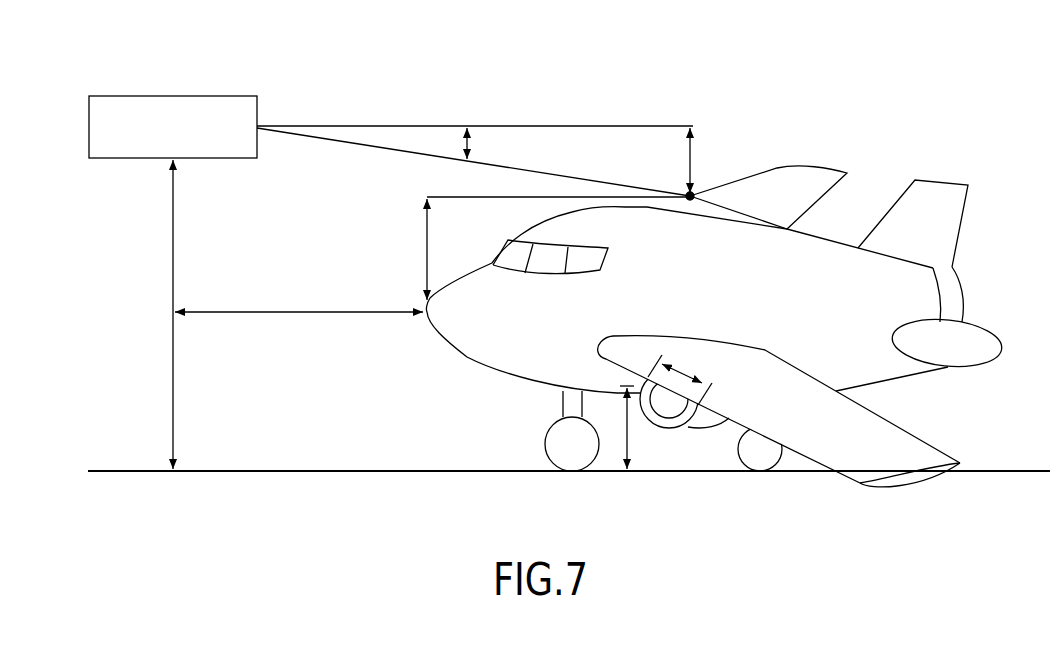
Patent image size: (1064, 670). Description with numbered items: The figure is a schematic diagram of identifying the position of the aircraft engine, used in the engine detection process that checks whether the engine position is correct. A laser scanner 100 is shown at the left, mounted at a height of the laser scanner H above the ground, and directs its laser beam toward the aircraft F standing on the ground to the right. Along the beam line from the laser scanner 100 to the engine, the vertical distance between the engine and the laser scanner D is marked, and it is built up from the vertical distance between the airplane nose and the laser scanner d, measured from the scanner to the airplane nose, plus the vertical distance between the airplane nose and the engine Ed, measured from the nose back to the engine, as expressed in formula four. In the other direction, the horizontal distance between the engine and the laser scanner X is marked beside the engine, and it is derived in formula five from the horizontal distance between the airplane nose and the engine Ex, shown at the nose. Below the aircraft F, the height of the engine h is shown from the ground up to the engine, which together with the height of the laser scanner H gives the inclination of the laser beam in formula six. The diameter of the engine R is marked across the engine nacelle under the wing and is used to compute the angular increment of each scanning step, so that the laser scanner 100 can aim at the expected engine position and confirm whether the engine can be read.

The laser scanner 100 is at (172, 96).
The aircraft F is at (878, 160).
The vertical distance between the engine and the laser scanner D is at (534, 125).
The height of the laser scanner H is at (160, 314).
The horizontal distance between the engine and the laser scanner X is at (703, 160).
The vertical distance between the airplane nose and the engine Ed is at (492, 197).
The horizontal distance between the airplane nose and the engine Ex is at (410, 249).
The vertical distance between the airplane nose and the laser scanner d is at (299, 296).
The height of the engine h is at (619, 427).
The diameter of the engine R is at (680, 376).